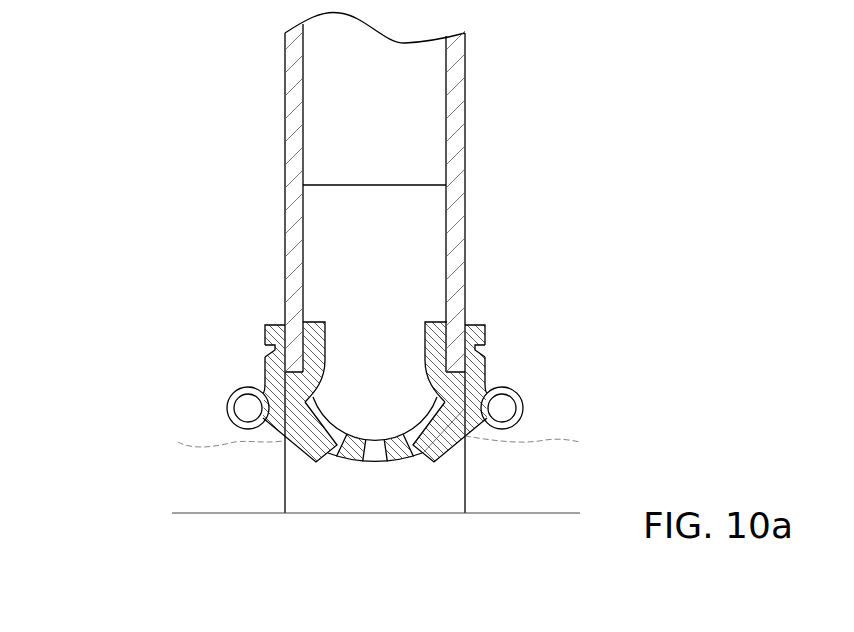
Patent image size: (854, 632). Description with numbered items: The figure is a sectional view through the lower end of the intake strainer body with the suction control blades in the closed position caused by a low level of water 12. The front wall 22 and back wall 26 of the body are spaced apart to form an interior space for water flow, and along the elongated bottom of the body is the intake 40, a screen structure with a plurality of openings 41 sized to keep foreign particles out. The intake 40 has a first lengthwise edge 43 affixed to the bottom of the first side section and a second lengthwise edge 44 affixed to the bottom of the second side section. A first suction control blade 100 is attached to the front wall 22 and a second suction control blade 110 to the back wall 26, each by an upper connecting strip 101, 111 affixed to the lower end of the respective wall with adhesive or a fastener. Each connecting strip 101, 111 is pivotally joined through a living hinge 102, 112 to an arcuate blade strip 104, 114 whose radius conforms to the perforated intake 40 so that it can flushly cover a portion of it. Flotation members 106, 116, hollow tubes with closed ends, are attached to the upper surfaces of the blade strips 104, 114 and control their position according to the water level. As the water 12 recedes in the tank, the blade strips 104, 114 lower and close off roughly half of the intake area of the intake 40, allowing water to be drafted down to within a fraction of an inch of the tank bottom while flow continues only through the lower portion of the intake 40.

The water 12 is at (215, 472).
The front wall 22 is at (293, 83).
The back wall 26 is at (455, 88).
The intake 40 is at (372, 461).
The openings 41 is at (390, 452).
The first lengthwise edge 43 is at (325, 339).
The second lengthwise edge 44 is at (427, 347).
The first suction control blade 100 is at (188, 342).
The upper connecting strip 101 is at (277, 323).
The living hinge 102 is at (270, 352).
The arcuate blade strip 104 is at (306, 446).
The flotation member 106 is at (224, 398).
The second suction control blade 110 is at (562, 367).
The upper connecting strip 111 is at (481, 325).
The living hinge 112 is at (485, 352).
The arcuate blade strip 114 is at (445, 458).
The flotation member 116 is at (523, 412).